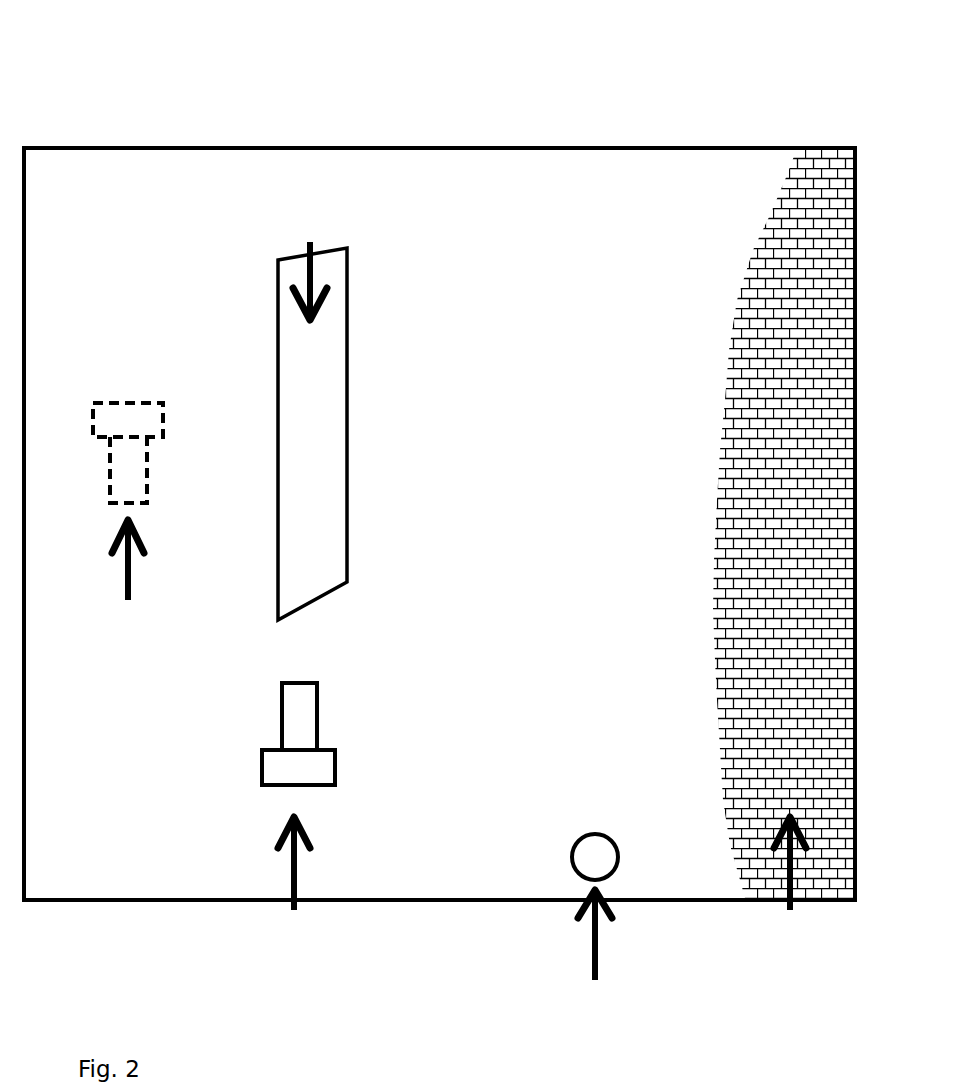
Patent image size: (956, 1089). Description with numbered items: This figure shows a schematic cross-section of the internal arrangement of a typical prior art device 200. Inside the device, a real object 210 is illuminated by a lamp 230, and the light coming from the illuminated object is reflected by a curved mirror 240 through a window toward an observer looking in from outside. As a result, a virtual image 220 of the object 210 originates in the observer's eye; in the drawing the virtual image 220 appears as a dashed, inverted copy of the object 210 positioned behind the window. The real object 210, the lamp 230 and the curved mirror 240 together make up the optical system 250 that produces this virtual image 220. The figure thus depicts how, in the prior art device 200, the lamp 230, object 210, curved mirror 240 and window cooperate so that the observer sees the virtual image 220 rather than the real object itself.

The prior art device 200 is at (80, 115).
The real object 210 is at (320, 838).
The virtual image 220 is at (139, 567).
The lamp 230 is at (609, 910).
The curved mirror 240 is at (755, 571).
The optical system 250 is at (342, 400).